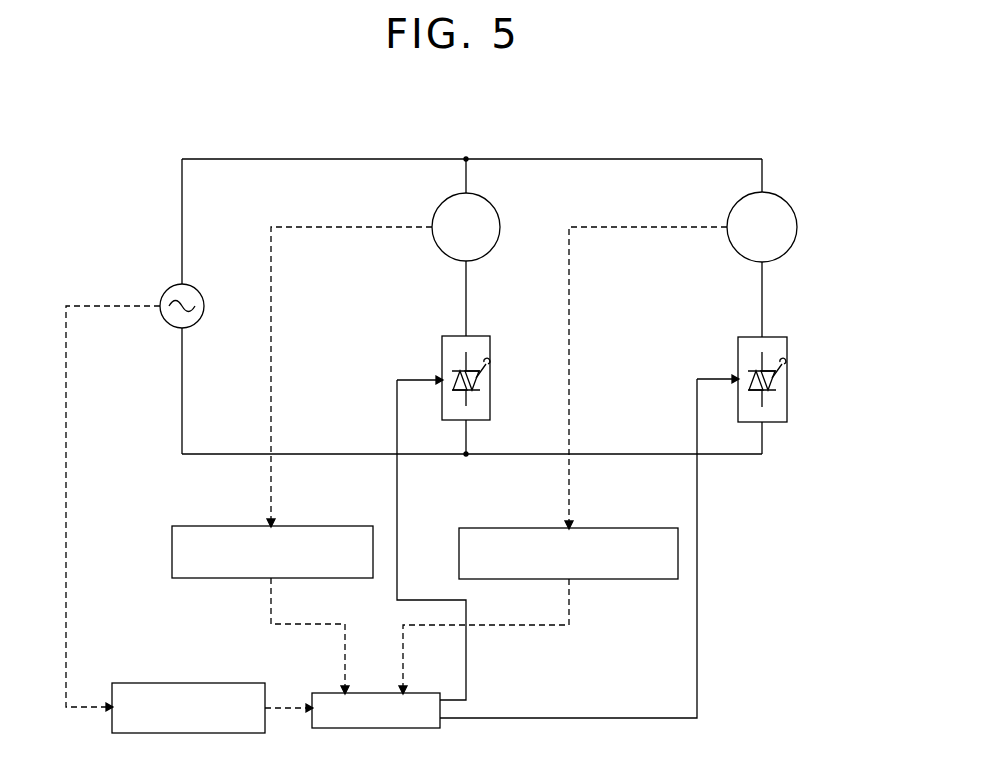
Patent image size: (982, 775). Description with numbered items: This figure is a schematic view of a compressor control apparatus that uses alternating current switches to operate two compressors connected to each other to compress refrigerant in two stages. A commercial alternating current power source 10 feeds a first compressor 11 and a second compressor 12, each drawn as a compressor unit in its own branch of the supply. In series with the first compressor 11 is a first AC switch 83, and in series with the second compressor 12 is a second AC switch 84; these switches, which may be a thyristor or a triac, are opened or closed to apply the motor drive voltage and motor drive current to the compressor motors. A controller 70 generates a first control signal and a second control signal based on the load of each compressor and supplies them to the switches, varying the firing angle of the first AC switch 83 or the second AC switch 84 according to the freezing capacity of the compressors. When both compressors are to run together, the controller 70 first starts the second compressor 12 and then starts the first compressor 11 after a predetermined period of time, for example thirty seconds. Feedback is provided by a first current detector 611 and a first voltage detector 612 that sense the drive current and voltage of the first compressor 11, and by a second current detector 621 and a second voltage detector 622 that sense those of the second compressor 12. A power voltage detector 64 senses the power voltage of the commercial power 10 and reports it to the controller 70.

The commercial alternating current power 10 is at (166, 291).
The first compressor 11 is at (500, 228).
The second compressor 12 is at (797, 228).
The first AC switch 83 is at (490, 380).
The second AC switch 84 is at (787, 379).
The first current detector 611 is at (272, 528).
The first voltage detector 612 is at (230, 526).
The second current detector 621 is at (568, 528).
The second voltage detector 622 is at (529, 528).
The power voltage detector 64 is at (222, 683).
The controller 70 is at (373, 693).